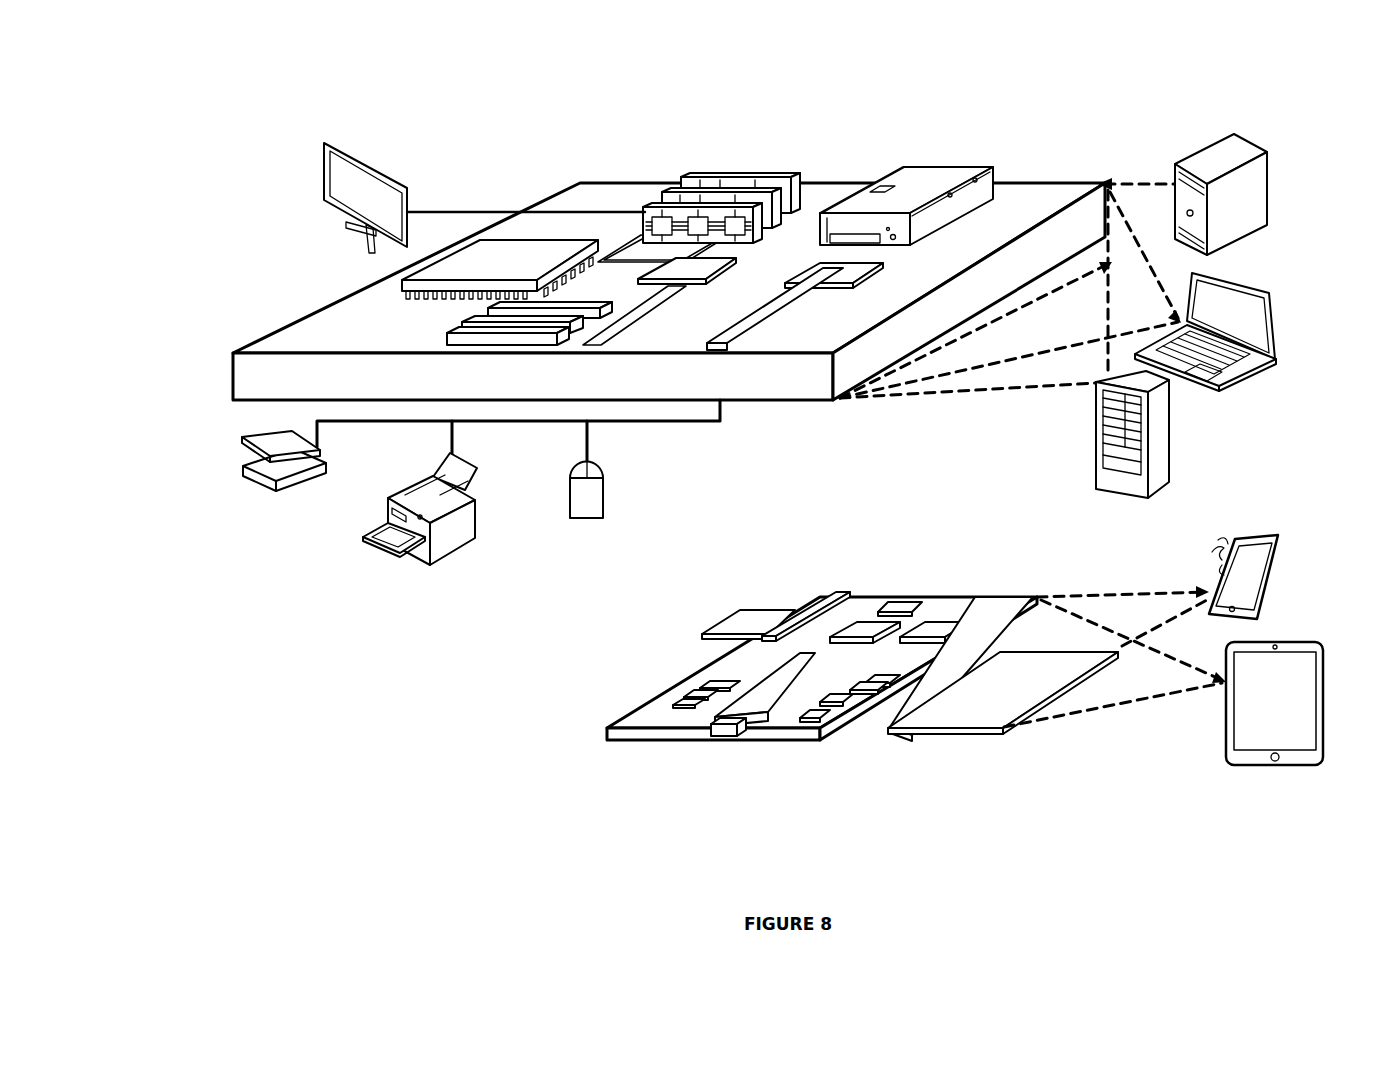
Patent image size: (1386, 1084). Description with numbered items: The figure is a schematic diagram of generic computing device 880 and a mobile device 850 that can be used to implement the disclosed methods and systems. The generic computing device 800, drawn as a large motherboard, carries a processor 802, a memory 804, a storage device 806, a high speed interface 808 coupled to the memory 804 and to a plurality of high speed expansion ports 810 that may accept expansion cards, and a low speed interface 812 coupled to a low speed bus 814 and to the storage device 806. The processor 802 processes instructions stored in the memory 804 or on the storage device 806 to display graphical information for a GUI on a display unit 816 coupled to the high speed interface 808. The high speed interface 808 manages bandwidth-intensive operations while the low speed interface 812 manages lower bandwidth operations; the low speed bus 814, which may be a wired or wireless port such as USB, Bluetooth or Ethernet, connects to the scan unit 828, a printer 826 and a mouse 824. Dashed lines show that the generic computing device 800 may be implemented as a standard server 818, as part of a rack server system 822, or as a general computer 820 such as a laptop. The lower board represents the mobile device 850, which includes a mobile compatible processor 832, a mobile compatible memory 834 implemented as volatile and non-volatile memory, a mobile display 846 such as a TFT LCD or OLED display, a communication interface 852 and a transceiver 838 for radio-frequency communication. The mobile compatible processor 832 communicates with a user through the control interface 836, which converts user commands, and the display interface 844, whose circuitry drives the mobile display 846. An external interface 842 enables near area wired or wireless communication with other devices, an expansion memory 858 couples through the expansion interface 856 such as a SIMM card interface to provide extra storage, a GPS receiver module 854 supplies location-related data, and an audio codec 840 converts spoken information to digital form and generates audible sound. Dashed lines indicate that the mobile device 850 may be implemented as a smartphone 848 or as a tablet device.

The generic computing device 800 is at (526, 183).
The processor 802 is at (400, 276).
The memory 804 is at (713, 174).
The storage device 806 is at (903, 168).
The high speed interface 808 is at (668, 268).
The high speed expansion ports 810 is at (465, 327).
The low speed interface 812 is at (858, 275).
The low speed bus 814 is at (738, 352).
The display unit 816 is at (328, 138).
The standard server 818 is at (1267, 157).
The general computer 820 is at (1275, 307).
The rack server system 822 is at (1097, 430).
The mouse 824 is at (586, 520).
The printer 826 is at (423, 568).
The scan unit 828 is at (243, 460).
The mobile compatible processor 832 is at (764, 718).
The mobile compatible memory 834 is at (695, 702).
The control interface 836 is at (872, 692).
The transceiver 838 is at (1010, 600).
The audio codec 840 is at (875, 675).
The external interface 842 is at (722, 745).
The display interface 844 is at (826, 740).
The mobile display 846 is at (1004, 730).
The smartphone 848 is at (1226, 556).
The mobile device 850 is at (1275, 768).
The communication interface 852 is at (868, 627).
The receiver module 854 is at (905, 600).
The expansion interface 856 is at (803, 608).
The expansion memory 858 is at (707, 625).
The generic computing device 880 is at (1194, 848).